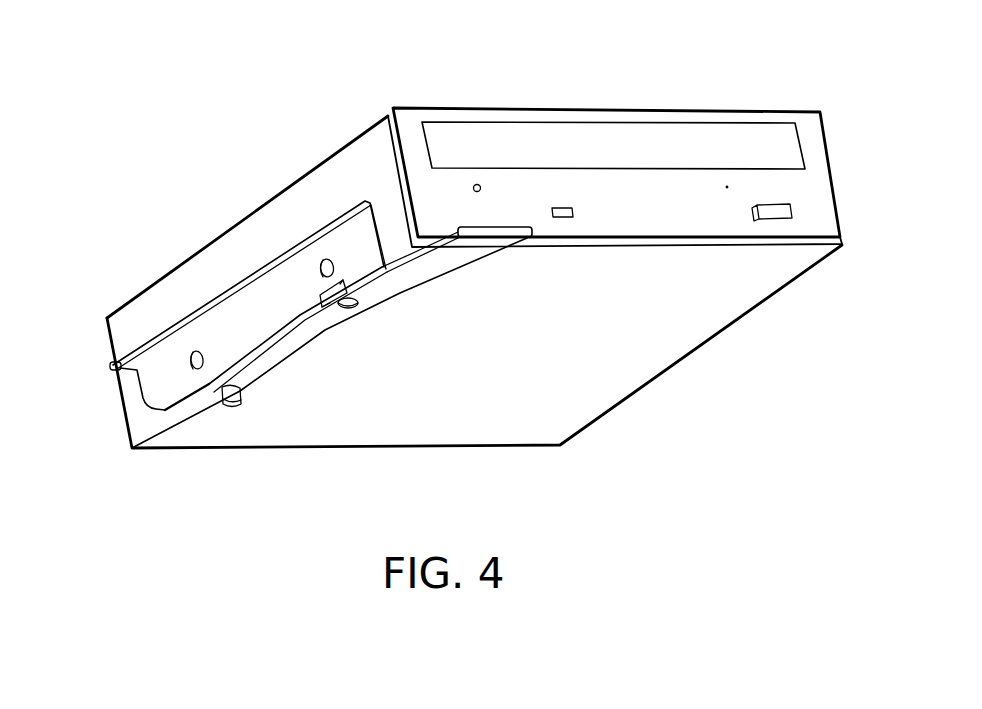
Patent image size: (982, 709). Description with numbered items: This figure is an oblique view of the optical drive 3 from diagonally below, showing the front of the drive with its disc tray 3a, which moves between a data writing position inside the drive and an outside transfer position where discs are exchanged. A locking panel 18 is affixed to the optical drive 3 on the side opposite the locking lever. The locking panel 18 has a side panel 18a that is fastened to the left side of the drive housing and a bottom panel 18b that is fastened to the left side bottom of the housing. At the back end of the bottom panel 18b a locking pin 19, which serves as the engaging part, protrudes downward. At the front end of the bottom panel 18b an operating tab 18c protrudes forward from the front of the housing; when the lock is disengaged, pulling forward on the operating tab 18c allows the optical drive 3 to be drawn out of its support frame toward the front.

The optical drive 3 is at (688, 96).
The disc tray 3a is at (787, 143).
The locking panel 18 is at (248, 264).
The side panel 18a is at (150, 387).
The bottom panel 18b is at (296, 345).
The operating tab 18c is at (488, 246).
The locking pin 19 is at (233, 408).